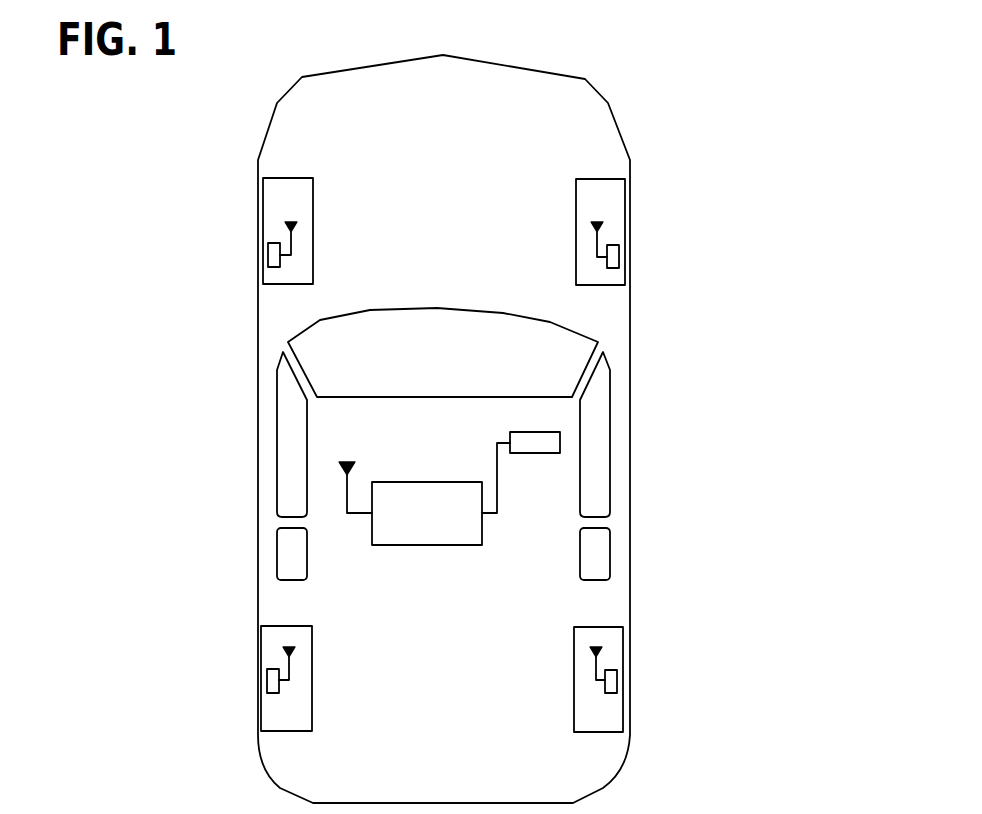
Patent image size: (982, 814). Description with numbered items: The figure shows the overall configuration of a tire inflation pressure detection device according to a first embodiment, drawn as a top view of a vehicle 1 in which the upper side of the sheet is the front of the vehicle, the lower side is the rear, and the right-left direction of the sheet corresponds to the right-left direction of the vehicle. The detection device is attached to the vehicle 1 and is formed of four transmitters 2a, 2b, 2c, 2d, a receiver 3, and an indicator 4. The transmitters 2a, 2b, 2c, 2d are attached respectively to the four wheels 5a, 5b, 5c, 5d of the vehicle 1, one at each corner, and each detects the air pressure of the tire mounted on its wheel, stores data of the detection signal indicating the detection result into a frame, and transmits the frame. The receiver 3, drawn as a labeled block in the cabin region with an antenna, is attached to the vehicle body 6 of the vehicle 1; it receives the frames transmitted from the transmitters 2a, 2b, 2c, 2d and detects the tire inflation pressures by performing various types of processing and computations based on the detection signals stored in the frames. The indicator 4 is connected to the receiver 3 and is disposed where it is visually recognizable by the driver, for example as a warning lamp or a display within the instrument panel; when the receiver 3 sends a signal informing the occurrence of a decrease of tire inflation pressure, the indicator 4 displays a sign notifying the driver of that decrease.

The vehicle 1 is at (618, 60).
The transmitter 2a is at (619, 257).
The transmitter 2b is at (268, 255).
The transmitter 2c is at (617, 683).
The transmitter 2d is at (267, 682).
The receiver 3 is at (405, 482).
The indicator 4 is at (560, 441).
The wheel 5a is at (605, 179).
The wheel 5b is at (290, 178).
The wheel 5c is at (605, 627).
The wheel 5d is at (288, 626).
The vehicle body 6 is at (603, 95).